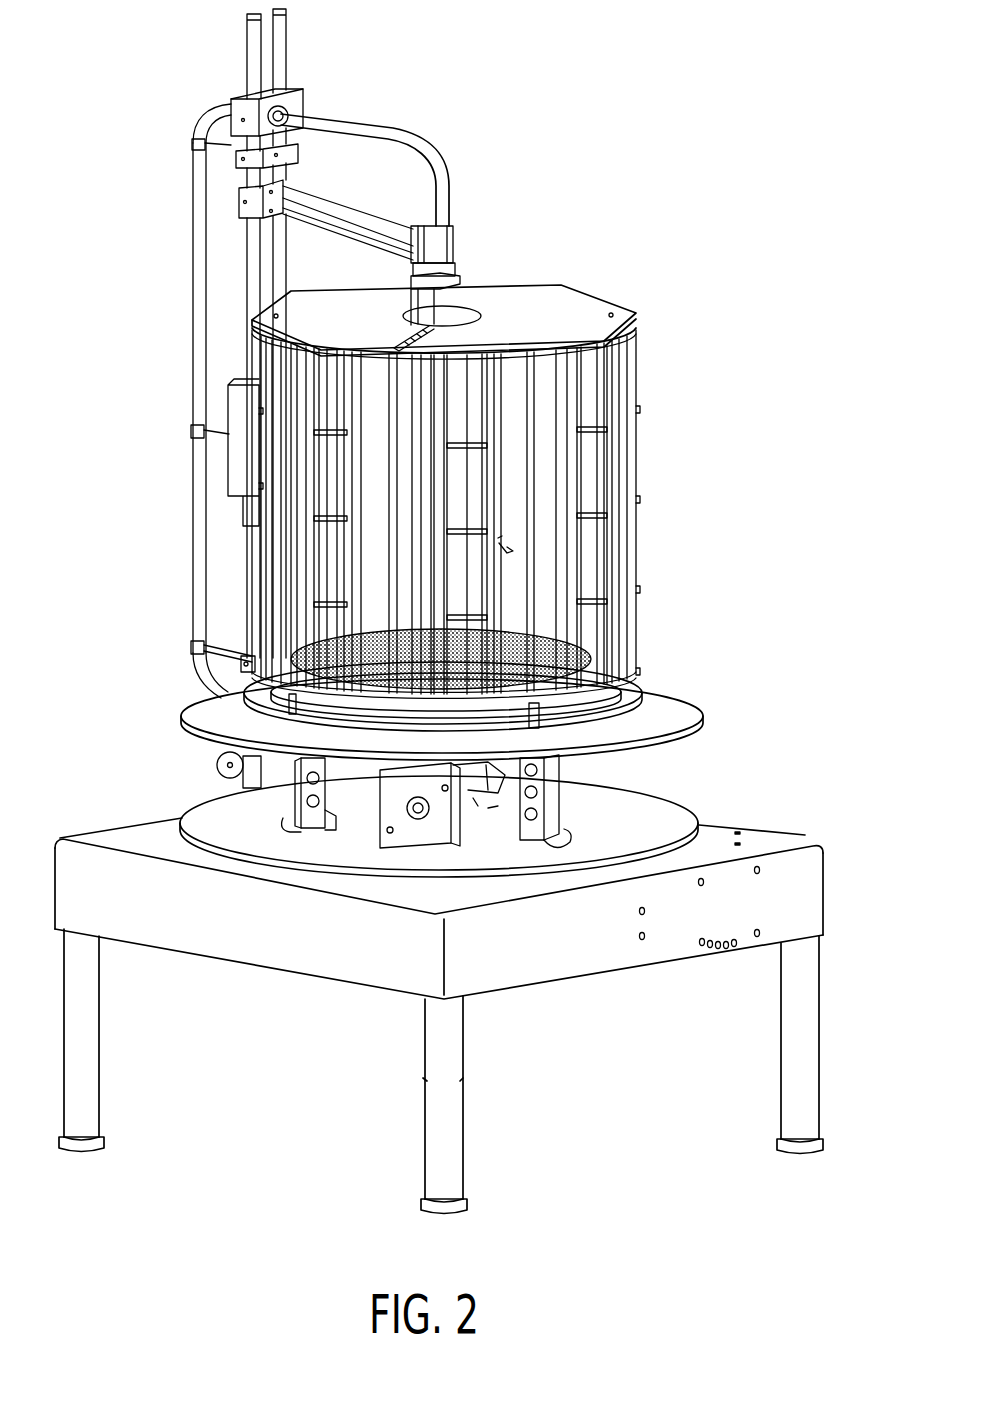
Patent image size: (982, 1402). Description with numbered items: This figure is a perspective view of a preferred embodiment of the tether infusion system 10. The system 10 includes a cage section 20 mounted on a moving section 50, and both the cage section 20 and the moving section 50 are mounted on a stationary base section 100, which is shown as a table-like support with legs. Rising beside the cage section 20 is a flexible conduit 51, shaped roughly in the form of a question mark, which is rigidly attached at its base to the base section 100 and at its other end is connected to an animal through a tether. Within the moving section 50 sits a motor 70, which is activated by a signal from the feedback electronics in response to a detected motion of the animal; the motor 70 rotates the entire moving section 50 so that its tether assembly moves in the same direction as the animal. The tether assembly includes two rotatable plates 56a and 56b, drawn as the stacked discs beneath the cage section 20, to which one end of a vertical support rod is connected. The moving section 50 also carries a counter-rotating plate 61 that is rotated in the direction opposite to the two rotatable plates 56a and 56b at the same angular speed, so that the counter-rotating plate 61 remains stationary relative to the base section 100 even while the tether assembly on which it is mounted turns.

The tether infusion system 10 is at (475, 427).
The cage section 20 is at (624, 465).
The moving section 50 is at (478, 748).
The flexible conduit 51 is at (375, 121).
The rotatable plate 56a is at (690, 715).
The rotatable plate 56b is at (689, 802).
The counter-rotating plate 61 is at (690, 687).
The motor 70 is at (406, 820).
The base section 100 is at (819, 878).